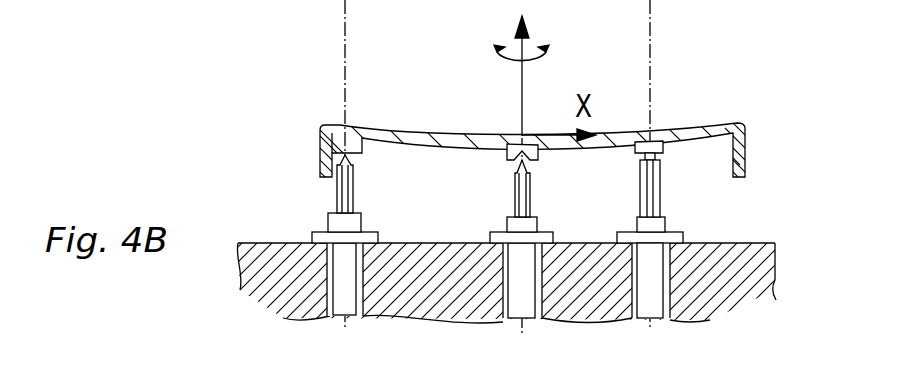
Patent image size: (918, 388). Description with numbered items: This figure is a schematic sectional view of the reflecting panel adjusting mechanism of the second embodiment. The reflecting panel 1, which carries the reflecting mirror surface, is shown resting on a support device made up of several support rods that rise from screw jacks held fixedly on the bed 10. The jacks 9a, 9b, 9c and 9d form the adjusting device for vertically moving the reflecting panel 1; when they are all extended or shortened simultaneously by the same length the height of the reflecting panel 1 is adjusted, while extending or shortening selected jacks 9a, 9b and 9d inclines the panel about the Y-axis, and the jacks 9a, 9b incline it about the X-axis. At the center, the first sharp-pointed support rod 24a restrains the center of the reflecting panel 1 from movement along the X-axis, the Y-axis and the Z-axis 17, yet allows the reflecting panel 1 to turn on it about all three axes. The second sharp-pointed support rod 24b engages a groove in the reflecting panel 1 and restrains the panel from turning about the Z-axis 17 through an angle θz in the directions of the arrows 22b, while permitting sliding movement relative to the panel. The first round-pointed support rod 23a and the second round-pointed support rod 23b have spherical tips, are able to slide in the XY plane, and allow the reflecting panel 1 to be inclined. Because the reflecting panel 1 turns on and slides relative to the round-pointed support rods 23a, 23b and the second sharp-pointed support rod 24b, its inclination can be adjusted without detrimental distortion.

The reflecting panel 1 is at (747, 152).
The bed 10 is at (774, 262).
The Z-axis 17 is at (528, 25).
The arrows 22b is at (548, 62).
The first sharp-pointed support rod 24a is at (515, 195).
The second sharp-pointed support rod 24b is at (337, 197).
The first round-pointed support rod 23a is at (664, 193).
The second round-pointed support rod 23b is at (722, 211).
The jack 9a is at (658, 323).
The jack 9b is at (688, 310).
The jack 9c is at (530, 320).
The jack 9d is at (327, 308).